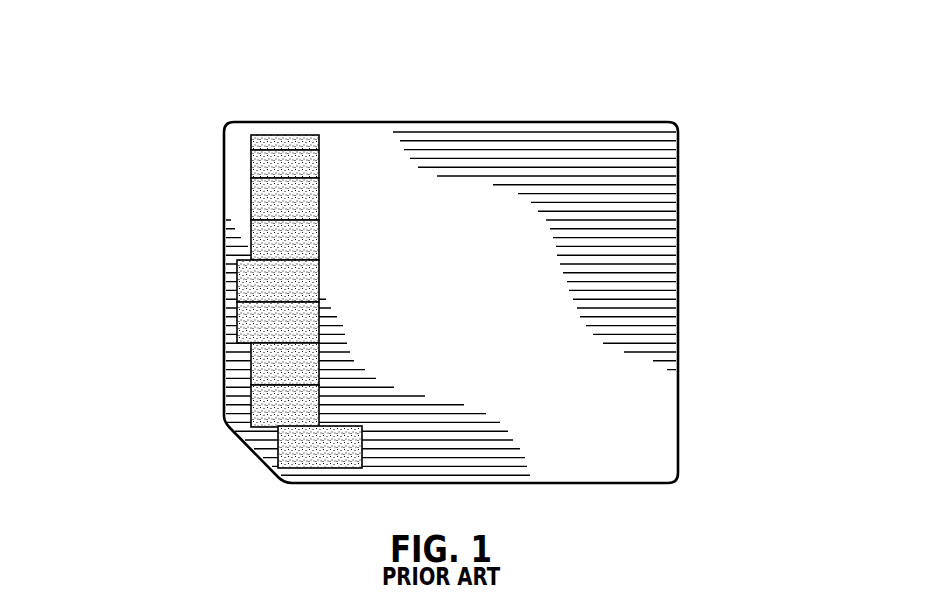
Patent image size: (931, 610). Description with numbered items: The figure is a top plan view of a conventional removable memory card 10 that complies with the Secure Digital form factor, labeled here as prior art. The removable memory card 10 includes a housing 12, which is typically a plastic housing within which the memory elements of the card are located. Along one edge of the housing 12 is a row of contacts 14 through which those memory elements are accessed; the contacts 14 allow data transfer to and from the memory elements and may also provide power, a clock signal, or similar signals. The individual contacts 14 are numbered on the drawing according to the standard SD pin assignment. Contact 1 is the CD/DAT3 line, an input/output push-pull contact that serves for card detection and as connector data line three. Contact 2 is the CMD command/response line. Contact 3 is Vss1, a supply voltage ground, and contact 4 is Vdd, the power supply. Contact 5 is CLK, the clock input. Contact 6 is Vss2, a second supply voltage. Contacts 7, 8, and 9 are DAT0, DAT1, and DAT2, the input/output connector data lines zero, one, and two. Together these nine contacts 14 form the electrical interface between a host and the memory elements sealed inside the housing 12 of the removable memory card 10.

The removable memory card 10 is at (444, 272).
The housing 12 is at (453, 148).
The contacts 14 is at (216, 285).
The contact CD/DAT3 1 is at (298, 406).
The contact CMD 2 is at (298, 364).
The contact Vss1 3 is at (291, 322).
The contact Vdd 4 is at (291, 281).
The contact CLK 5 is at (298, 240).
The contact Vss2 6 is at (298, 199).
The contact DAT0 7 is at (298, 163).
The contact DAT1 8 is at (298, 141).
The contact DAT2 9 is at (331, 447).